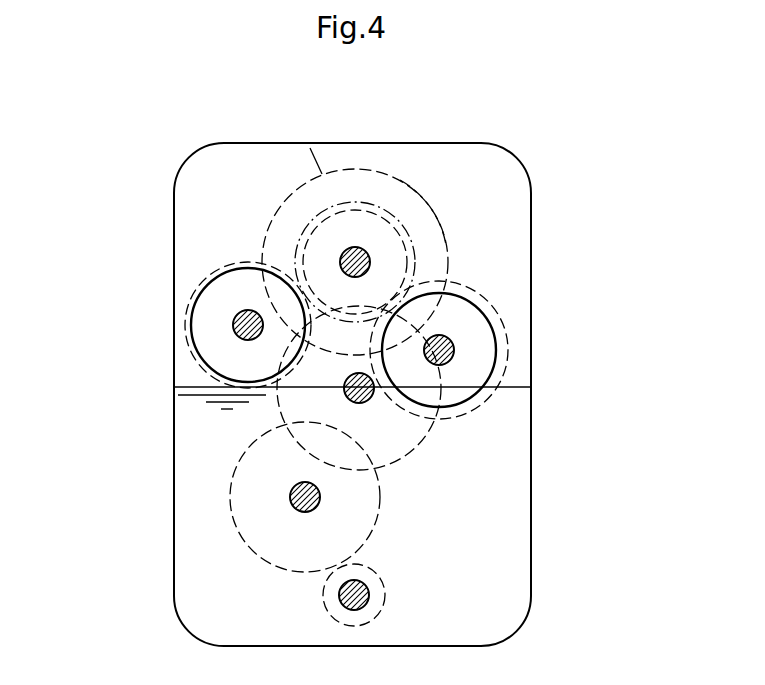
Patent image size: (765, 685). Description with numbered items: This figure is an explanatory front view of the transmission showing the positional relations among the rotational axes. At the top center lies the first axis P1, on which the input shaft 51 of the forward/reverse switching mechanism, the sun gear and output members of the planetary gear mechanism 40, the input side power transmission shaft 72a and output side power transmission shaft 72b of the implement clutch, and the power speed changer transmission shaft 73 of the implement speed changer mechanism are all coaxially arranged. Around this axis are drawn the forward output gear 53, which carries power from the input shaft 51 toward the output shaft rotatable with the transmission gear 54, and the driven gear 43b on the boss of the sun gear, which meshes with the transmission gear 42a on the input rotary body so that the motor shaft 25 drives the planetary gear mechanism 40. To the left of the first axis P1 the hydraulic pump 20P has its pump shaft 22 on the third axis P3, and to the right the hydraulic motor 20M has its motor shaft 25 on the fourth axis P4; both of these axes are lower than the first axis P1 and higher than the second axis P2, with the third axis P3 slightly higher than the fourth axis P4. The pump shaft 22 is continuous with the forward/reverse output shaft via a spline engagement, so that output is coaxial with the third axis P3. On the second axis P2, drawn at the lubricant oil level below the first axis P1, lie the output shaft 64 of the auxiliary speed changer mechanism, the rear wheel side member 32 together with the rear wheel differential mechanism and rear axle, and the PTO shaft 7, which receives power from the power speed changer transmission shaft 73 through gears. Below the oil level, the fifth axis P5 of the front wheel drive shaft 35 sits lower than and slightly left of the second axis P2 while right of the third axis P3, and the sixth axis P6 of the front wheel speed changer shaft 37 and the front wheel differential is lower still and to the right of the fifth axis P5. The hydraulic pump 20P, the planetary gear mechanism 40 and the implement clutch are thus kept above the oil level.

The planetary gear mechanism 40 is at (303, 141).
The input shaft 51 is at (393, 202).
The input side power transmission shaft 72a is at (393, 202).
The output side power transmission shaft 72b is at (393, 202).
The power speed changer transmission shaft 73 is at (393, 202).
The first axis P1 is at (351, 247).
The forward output gear 53 is at (292, 197).
The driven gear 43b is at (412, 193).
The hydraulic pump 20P is at (217, 279).
The transmission gear 54 is at (197, 286).
The pump shaft 22 is at (167, 322).
The third axis P3 is at (233, 322).
The hydraulic motor 20M is at (478, 300).
The transmission gear 42a is at (500, 307).
The motor shaft 25 is at (526, 347).
The fourth axis P4 is at (455, 352).
The output shaft 64 is at (402, 407).
The intermediate shaft 32 is at (402, 407).
The PTO shaft 7 is at (402, 407).
The second axis P2 is at (370, 401).
The front wheel drive shaft 35 is at (351, 497).
The fifth axis P5 is at (318, 502).
The front wheel speed changer shaft 37 is at (288, 595).
The sixth axis P6 is at (339, 600).